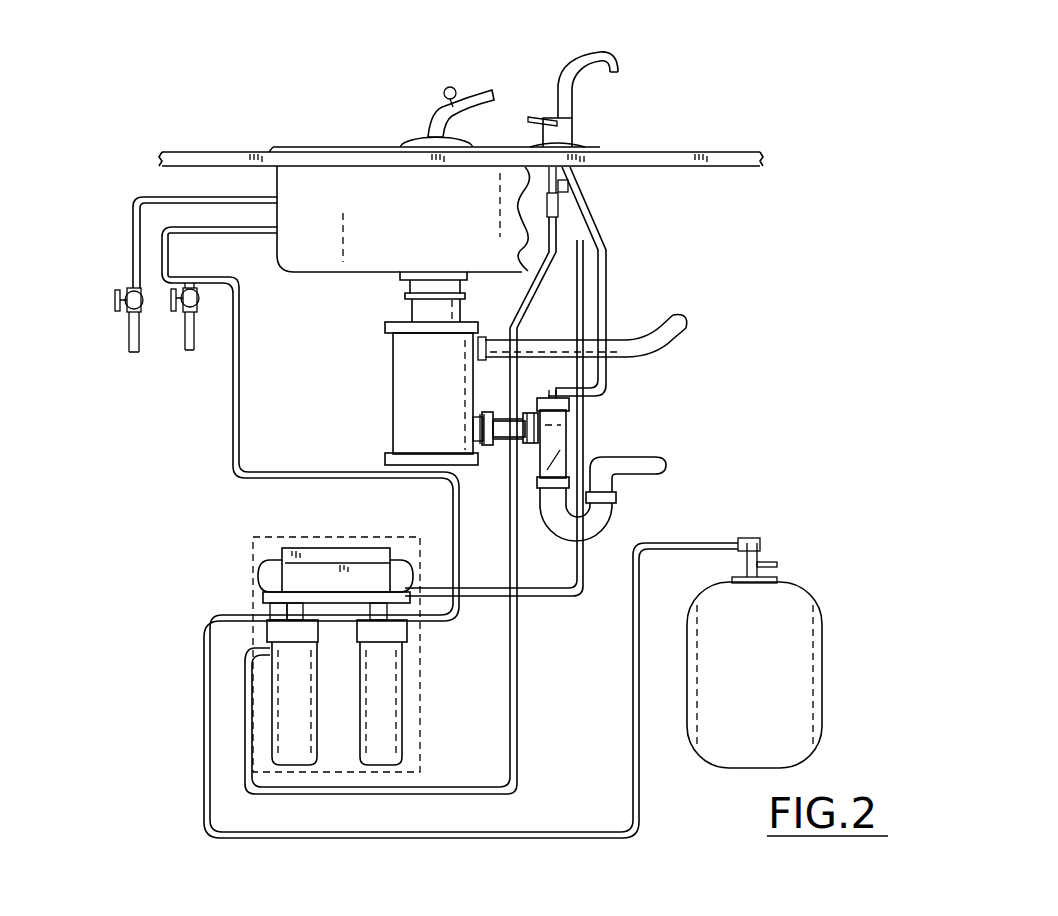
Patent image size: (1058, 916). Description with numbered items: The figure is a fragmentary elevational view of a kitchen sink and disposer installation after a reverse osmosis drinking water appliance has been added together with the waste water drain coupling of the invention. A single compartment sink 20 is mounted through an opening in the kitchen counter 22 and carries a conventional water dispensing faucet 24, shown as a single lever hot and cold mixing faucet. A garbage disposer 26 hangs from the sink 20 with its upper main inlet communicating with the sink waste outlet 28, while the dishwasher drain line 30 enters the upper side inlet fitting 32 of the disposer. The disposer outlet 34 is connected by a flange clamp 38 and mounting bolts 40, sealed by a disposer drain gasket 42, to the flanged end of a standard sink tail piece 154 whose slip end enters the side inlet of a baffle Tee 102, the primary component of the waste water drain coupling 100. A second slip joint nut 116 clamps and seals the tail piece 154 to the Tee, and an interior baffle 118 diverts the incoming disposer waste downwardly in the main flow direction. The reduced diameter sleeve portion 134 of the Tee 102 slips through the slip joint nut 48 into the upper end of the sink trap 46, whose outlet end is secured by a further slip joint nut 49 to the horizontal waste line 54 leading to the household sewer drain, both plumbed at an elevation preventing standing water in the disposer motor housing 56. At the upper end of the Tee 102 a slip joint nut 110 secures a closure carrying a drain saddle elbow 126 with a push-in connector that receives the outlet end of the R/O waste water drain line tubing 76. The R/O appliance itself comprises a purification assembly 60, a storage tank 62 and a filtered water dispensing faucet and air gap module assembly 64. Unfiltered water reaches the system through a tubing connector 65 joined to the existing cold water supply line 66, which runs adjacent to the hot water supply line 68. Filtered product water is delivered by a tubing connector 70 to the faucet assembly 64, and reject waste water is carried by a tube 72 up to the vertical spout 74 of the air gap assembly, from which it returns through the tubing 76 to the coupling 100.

The single compartment sink 20 is at (326, 281).
The kitchen counter 22 is at (228, 145).
The water dispensing faucet 24 is at (445, 85).
The garbage disposer 26 is at (385, 343).
The sink waste outlet 28 is at (409, 276).
The dishwater drain line 30 is at (656, 315).
The upper side inlet fitting 32 is at (481, 338).
The disposer outlet 34 is at (470, 432).
The flange clamp 38 is at (492, 448).
The mounting bolts 40 is at (496, 405).
The disposer drain gasket 42 is at (470, 416).
The sink trap 46 is at (627, 497).
The slip joint nut 48 is at (525, 505).
The slip joint nut 49 is at (626, 497).
The horizontal waste line 54 is at (656, 460).
The disposer motor housing 56 is at (386, 460).
The purification assembly 60 is at (246, 583).
The storage tank 62 is at (826, 615).
The filtered water dispensing faucet and air gap module assembly 64 is at (577, 127).
The tubing connector 65 is at (232, 430).
The cold water supply line 66 is at (188, 350).
The hot water supply line 68 is at (134, 352).
The tubing connector 70 is at (519, 703).
The tube 72 is at (578, 597).
The vertical spout 74 is at (569, 186).
The R/O waste water drain line tubing 76 is at (605, 216).
The waste water drain coupling 100 is at (532, 364).
The baffle Tee 102 is at (600, 406).
The slip joint nut 110 is at (585, 397).
The second slip joint nut 116 is at (534, 445).
The interior baffle 118 is at (583, 426).
The drain saddle elbow 126 is at (561, 377).
The reduced diameter sleeve portion 134 is at (580, 468).
The sink tail piece 154 is at (507, 445).